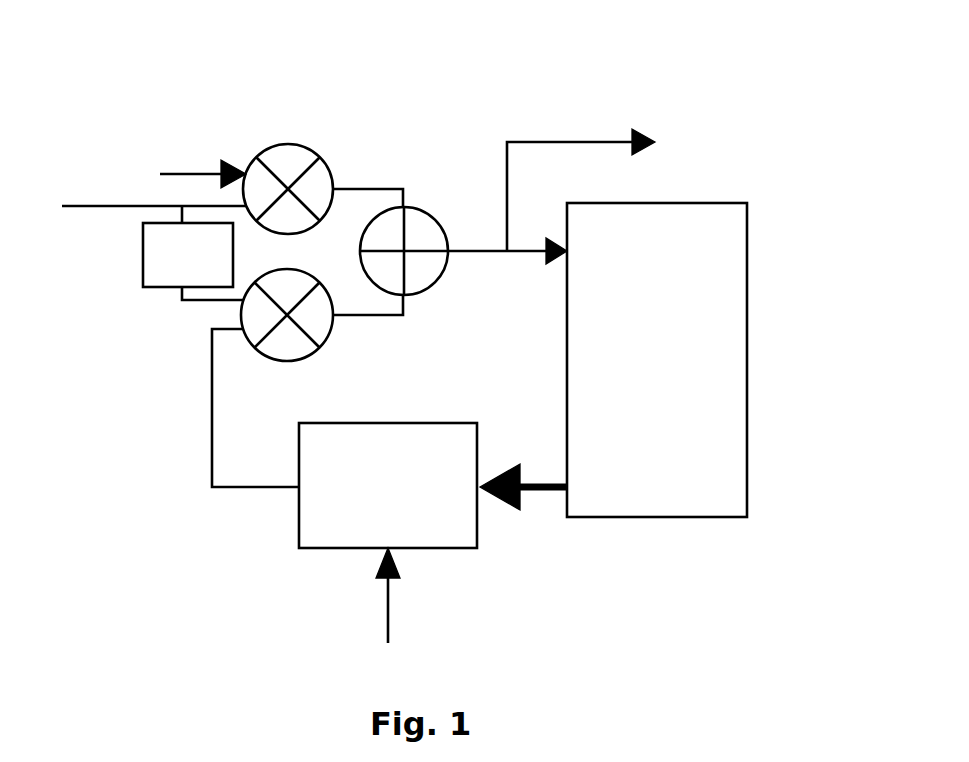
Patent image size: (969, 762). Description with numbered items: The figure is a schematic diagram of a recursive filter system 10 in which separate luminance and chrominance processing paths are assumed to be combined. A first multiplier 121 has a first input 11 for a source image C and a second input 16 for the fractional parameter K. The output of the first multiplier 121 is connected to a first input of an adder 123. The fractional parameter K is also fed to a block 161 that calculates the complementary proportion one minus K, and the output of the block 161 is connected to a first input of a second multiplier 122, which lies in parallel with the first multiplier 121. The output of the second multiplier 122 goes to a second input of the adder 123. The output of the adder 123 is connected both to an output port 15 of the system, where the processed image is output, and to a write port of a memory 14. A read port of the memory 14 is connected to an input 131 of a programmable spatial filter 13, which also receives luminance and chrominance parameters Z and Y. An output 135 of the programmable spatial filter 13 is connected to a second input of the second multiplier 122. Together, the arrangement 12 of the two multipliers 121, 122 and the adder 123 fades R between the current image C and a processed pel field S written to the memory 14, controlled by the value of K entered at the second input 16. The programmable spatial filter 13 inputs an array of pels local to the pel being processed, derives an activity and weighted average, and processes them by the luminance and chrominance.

The recursive filter system 10 is at (136, 42).
The first input 11 is at (185, 162).
The arrangement 12 is at (384, 149).
The first multiplier 121 is at (288, 145).
The second multiplier 122 is at (317, 352).
The adder 123 is at (427, 293).
The programmable spatial filter 13 is at (347, 533).
The input 131 is at (481, 489).
The output 135 is at (297, 491).
The memory 14 is at (597, 360).
The output port 15 is at (600, 178).
The second input 16 is at (149, 207).
The block 161 is at (143, 265).